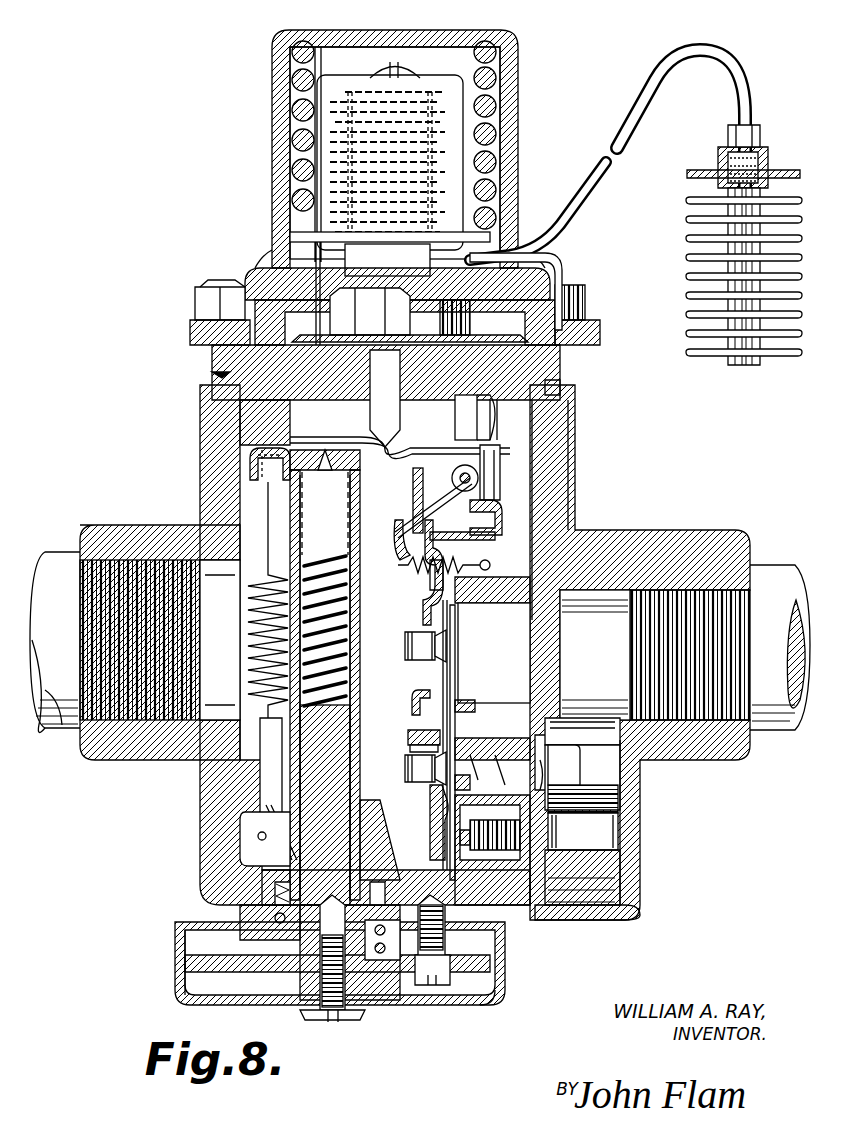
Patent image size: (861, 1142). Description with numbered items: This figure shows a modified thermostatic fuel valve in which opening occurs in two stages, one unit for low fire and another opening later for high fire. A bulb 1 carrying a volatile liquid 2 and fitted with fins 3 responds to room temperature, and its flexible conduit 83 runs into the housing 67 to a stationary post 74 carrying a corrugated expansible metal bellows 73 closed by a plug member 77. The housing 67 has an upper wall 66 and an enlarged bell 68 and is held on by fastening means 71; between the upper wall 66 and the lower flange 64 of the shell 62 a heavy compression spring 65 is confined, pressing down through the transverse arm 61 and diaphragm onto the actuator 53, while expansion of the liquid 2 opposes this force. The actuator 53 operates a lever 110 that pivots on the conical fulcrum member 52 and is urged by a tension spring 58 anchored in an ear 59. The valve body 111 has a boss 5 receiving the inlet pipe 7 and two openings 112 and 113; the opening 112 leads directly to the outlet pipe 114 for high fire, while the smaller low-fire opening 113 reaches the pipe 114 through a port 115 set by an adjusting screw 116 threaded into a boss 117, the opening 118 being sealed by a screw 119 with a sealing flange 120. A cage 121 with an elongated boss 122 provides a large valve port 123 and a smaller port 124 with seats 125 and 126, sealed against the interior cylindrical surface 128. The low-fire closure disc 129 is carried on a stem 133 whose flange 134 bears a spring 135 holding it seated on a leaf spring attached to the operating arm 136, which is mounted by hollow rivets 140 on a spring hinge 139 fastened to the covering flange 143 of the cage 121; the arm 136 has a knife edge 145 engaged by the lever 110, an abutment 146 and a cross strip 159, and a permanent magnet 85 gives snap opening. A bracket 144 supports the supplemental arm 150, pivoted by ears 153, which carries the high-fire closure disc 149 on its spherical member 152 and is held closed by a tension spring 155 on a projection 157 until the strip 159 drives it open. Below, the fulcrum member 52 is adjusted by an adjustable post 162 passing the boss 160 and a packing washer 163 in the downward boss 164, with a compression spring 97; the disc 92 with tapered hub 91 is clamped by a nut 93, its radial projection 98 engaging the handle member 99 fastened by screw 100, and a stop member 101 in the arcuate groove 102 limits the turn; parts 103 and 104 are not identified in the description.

The bulb 1 is at (757, 230).
The volatile liquid 2 is at (757, 157).
The fins 3 is at (685, 311).
The boss 5 is at (128, 530).
The pipe or conduit 7 is at (58, 556).
The fulcrum member 52 is at (325, 470).
The actuator 53 is at (386, 396).
The tension spring 58 is at (266, 578).
The ear 59 is at (258, 818).
The transverse arm 61 is at (478, 336).
The shell 62 is at (325, 157).
The lower flange 64 is at (292, 233).
The compression spring 65 is at (496, 128).
The upper wall 66 is at (402, 34).
The housing 67 is at (512, 92).
The enlarged bell 68 is at (262, 278).
The fastening means 71 is at (205, 292).
The corrugated expansible metal bellows 73 is at (292, 120).
The stationary post 74 is at (387, 260).
The plug member 77 is at (272, 90).
The flexible tube or conduit 83 is at (598, 188).
The permanent magnet 85 is at (480, 872).
The tapered hub 91 is at (385, 948).
The disc 92 is at (218, 972).
The nut 93 is at (370, 990).
The compression spring 97 is at (262, 958).
The radial projection 98 is at (182, 960).
The handle member 99 is at (490, 998).
The screw 100 is at (355, 1018).
The stop member 101 is at (440, 948).
The arcuate peripheral groove 102 is at (450, 966).
The tube 103 is at (305, 518).
The spring 104 is at (322, 566).
The lever 110 is at (410, 440).
The valve body 111 is at (570, 404).
The opening 112 is at (593, 655).
The opening 113 is at (550, 770).
The outlet pipe 114 is at (778, 568).
The port 115 is at (600, 726).
The adjusting screw 116 is at (600, 797).
The boss 117 is at (630, 845).
The opening 118 is at (617, 832).
The screw 119 is at (600, 877).
The sealing flange 120 is at (632, 910).
The cage 121 is at (452, 545).
The boss 122 is at (488, 577).
The valve port 123 is at (494, 653).
The low fire valve port 124 is at (501, 766).
The valve seat 125 is at (456, 612).
The valve seat 126 is at (462, 760).
The interior cylindrical surface 128 is at (570, 395).
The valve closure disc 129 is at (458, 778).
The stem 133 is at (418, 768).
The flange 134 is at (408, 735).
The spring 135 is at (412, 750).
The operating arm 136 is at (430, 510).
The spring hinge 139 is at (496, 432).
The hollow rivets 140 is at (497, 520).
The covering flange 143 is at (212, 374).
The bracket 144 is at (465, 418).
The knife edge 145 is at (482, 480).
The abutment 146 is at (438, 800).
The high fire valve closure disc 149 is at (455, 655).
The arm 150 is at (424, 600).
The spherical member 152 is at (440, 638).
The ears 153 is at (424, 487).
The tension spring 155 is at (423, 584).
The projection 157 is at (395, 542).
The cross strip 159 is at (440, 710).
The boss 160 is at (285, 852).
The adjustable post 162 is at (300, 775).
The packing washer 163 is at (270, 900).
The boss 164 is at (252, 925).